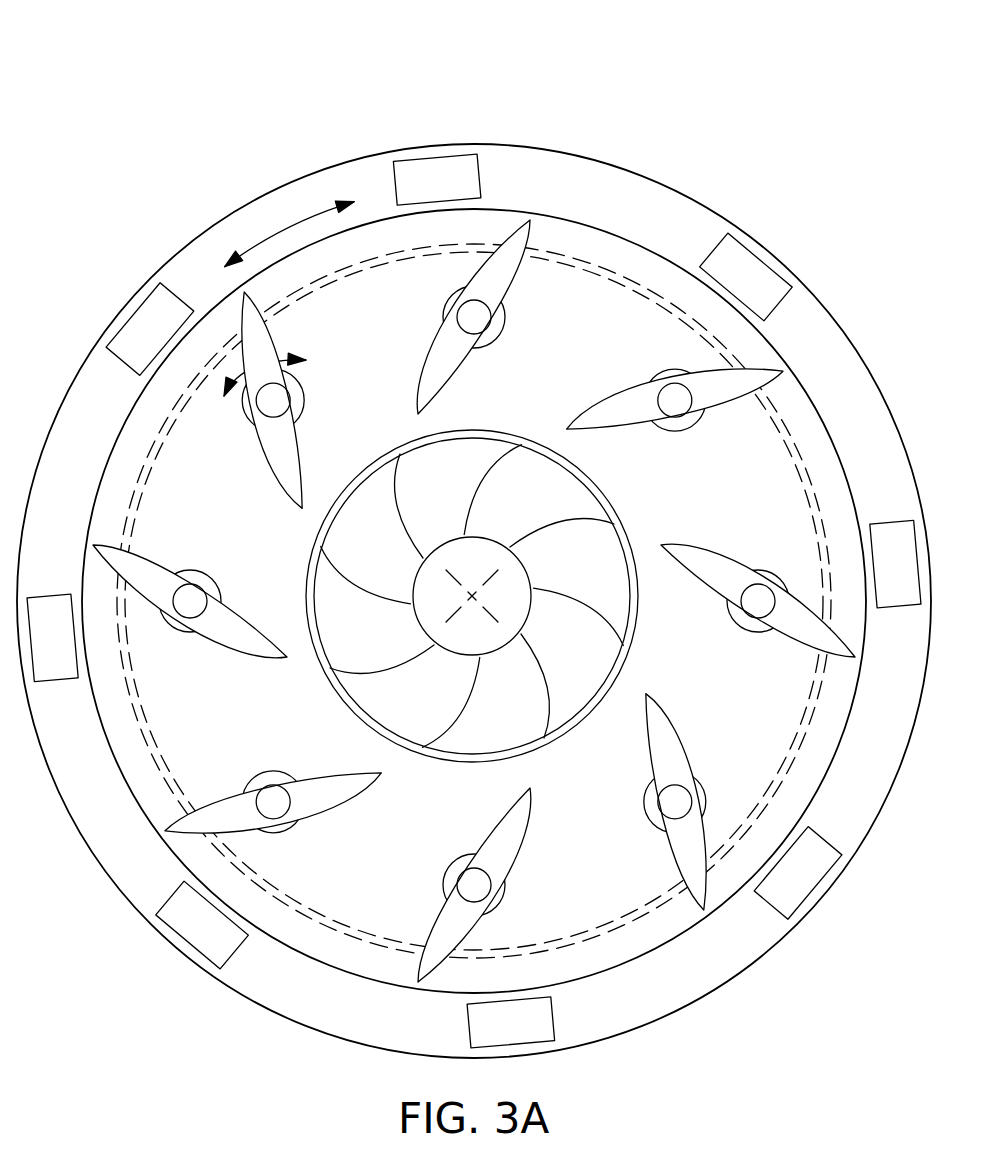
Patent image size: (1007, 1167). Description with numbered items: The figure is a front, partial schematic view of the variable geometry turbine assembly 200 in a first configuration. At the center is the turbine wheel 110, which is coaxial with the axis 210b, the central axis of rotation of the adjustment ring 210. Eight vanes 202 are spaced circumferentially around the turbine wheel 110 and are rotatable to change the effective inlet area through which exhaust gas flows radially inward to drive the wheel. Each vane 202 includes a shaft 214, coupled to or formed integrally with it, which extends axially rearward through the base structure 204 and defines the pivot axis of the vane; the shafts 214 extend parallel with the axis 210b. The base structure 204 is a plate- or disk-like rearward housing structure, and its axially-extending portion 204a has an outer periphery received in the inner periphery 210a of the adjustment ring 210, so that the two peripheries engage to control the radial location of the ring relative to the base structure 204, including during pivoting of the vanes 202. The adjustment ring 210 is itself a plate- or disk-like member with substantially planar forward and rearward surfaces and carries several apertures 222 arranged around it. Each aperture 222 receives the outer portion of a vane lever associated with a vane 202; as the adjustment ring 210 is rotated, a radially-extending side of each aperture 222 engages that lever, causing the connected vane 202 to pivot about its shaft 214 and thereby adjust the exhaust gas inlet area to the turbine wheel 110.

The variable geometry turbine assembly 200 is at (474, 555).
The vane 202 is at (733, 365).
The base structure 204 is at (498, 208).
The axially-extending portion 204a is at (657, 893).
The adjustment ring 210 is at (719, 212).
The inner periphery 210a is at (610, 927).
The axis 210b is at (475, 587).
The turbine wheel 110 is at (533, 450).
The shaft 214 is at (647, 380).
The aperture 222 is at (890, 522).